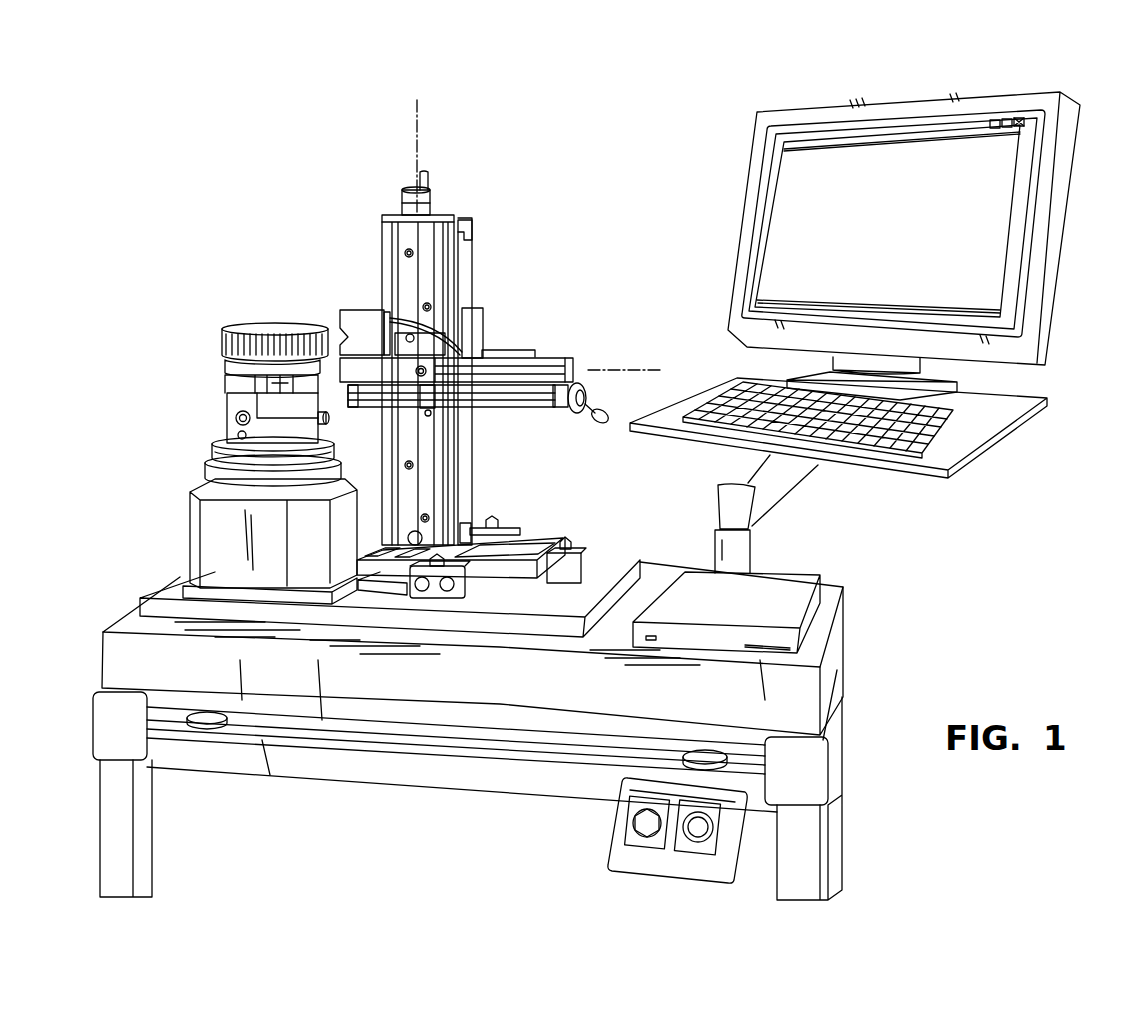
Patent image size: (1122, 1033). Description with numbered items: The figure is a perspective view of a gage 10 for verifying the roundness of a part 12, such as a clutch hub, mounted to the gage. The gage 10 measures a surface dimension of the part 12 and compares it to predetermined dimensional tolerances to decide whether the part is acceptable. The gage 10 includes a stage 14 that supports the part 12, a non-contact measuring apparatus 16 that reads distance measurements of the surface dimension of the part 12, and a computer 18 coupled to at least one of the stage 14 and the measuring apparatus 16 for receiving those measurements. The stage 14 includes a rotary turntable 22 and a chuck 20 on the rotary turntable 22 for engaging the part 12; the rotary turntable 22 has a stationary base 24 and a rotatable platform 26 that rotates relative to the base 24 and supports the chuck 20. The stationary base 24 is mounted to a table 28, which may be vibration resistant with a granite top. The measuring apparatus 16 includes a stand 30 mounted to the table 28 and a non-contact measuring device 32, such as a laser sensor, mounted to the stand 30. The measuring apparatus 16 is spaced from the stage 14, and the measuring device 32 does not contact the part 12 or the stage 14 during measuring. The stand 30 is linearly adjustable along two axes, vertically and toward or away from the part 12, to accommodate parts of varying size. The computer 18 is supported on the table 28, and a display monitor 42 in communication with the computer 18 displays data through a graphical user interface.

The gage 10 is at (306, 194).
The part 12 is at (222, 342).
The stage 14 is at (178, 518).
The non-contact measuring apparatus 16 is at (510, 277).
The computer 18 is at (800, 573).
The chuck 20 is at (262, 372).
The rotary turntable 22 is at (218, 426).
The stationary base 24 is at (210, 468).
The rotatable platform 26 is at (222, 455).
The table 28 is at (162, 605).
The stand 30 is at (462, 259).
The non-contact measuring device 32 is at (362, 318).
The display monitor 42 is at (1032, 82).